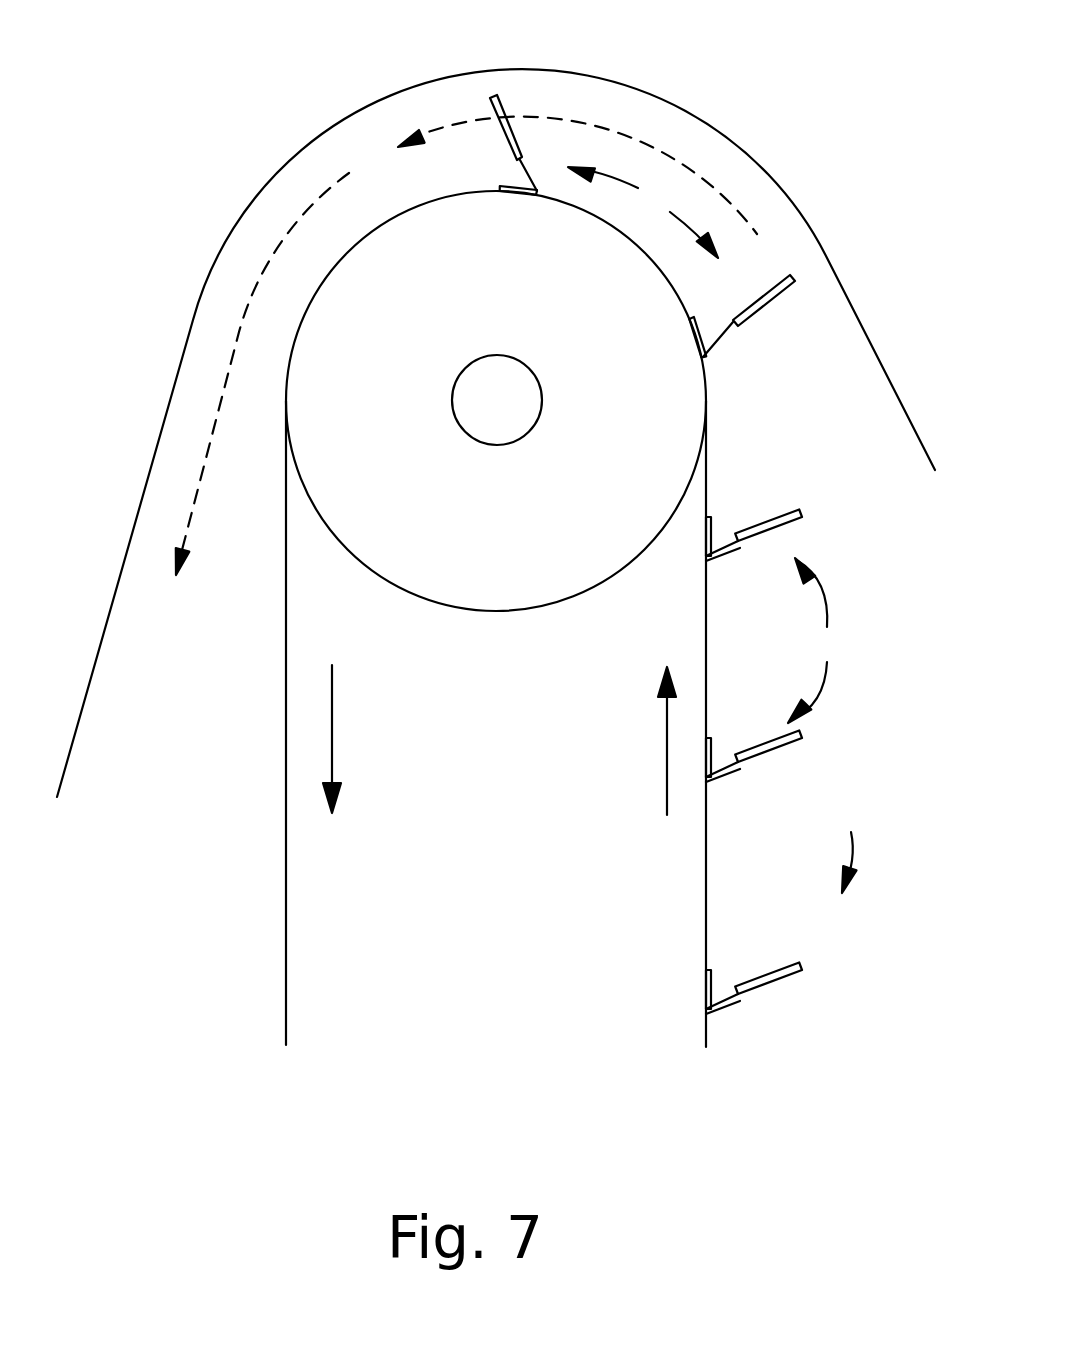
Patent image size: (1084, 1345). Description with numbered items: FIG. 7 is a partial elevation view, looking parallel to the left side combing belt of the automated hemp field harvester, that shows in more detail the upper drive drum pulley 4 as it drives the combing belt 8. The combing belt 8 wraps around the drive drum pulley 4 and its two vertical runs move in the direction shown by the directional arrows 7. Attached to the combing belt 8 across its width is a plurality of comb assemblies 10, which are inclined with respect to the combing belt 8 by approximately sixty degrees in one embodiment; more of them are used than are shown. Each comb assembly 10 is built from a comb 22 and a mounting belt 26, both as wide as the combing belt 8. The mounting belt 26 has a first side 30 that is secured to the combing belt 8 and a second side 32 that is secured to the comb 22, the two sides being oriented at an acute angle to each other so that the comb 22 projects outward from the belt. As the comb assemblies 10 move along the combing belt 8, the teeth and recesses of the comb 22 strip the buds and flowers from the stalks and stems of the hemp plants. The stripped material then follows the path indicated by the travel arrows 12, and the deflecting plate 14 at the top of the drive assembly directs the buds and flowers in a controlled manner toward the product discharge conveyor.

The drive drum pulley 4 is at (348, 250).
The directional arrows 7 is at (533, 768).
The combing belt 8 is at (286, 738).
The comb assemblies 10 is at (715, 530).
The travel arrows 12 is at (598, 130).
The deflecting plate 14 is at (755, 165).
The comb 22 is at (795, 978).
The mounting belt 26 is at (730, 1058).
The first side 30 is at (716, 982).
The second side 32 is at (745, 1002).